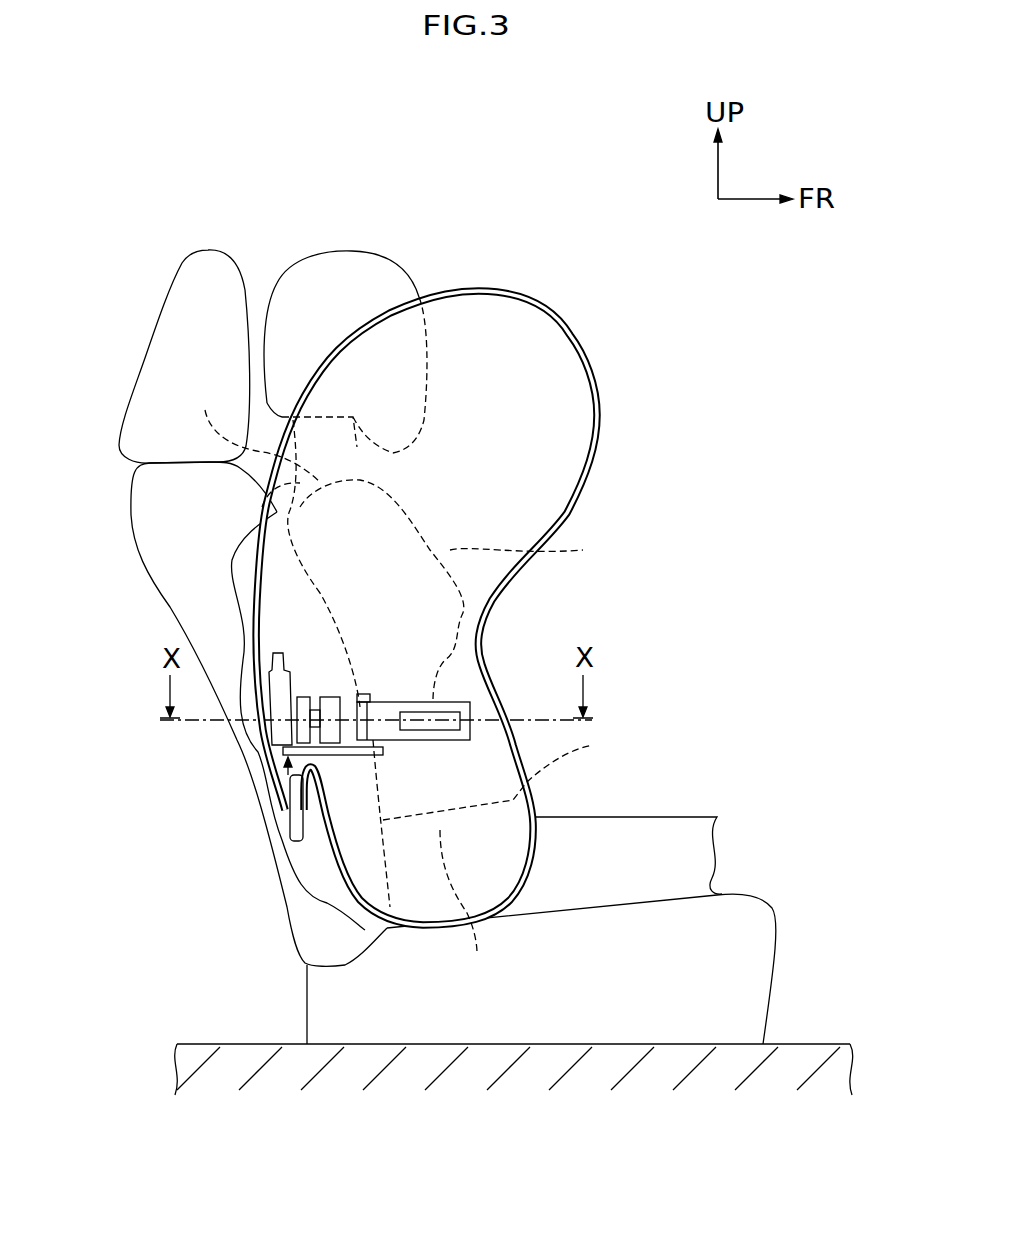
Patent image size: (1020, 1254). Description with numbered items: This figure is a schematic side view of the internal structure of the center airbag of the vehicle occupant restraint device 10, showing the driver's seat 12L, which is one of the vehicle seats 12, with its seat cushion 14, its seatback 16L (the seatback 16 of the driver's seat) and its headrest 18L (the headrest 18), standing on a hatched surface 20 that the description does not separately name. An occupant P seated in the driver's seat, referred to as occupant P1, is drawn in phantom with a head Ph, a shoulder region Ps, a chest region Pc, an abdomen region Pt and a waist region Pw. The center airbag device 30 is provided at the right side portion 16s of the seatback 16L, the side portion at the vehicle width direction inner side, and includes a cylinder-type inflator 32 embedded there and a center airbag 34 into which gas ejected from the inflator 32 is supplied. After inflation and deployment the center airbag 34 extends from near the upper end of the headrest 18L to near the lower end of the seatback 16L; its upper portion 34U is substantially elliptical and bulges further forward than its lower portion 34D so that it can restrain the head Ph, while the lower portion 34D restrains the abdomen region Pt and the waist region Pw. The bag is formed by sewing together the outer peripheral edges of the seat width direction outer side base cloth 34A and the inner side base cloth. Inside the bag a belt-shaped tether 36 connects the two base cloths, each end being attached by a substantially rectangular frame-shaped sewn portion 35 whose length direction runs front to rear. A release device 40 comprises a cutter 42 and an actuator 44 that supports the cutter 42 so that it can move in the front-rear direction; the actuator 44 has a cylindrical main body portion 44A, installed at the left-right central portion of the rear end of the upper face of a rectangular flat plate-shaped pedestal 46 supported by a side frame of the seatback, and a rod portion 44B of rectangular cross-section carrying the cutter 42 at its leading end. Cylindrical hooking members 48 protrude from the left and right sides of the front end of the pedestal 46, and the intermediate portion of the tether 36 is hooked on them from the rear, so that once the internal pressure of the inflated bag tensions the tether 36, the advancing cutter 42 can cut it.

The vehicle occupant restraint device 10 is at (605, 462).
The driver's seat 12L is at (176, 647).
The vehicle seat 12 is at (143, 350).
The seat cushion 14 is at (765, 970).
The seatback 16L is at (210, 714).
The seatback 16 is at (133, 546).
The right side portion 16s is at (172, 600).
The headrest 18L is at (184, 321).
The headrest 18 is at (201, 250).
The floor 20 is at (805, 1044).
The center airbag device 30 is at (501, 288).
The inflator 32 is at (303, 842).
The center airbag 34 is at (558, 306).
The upper portion 34U is at (600, 381).
The lower portion 34D is at (533, 798).
The seat width direction outer side base cloth 34A is at (475, 700).
The sewn portion 35 is at (447, 739).
The tether 36 is at (385, 702).
The release device 40 is at (285, 800).
The cutter 42 is at (300, 688).
The actuator 44 is at (288, 662).
The main body portion 44A is at (285, 768).
The rod portion 44B is at (305, 762).
The pedestal 46 is at (385, 753).
The hooking member 48 is at (367, 694).
The occupant P1 is at (348, 316).
The occupant P is at (334, 251).
The head Ph is at (370, 266).
The shoulder region Ps is at (252, 431).
The chest region Pc is at (442, 563).
The abdomen region Pt is at (500, 818).
The waist region Pw is at (471, 909).